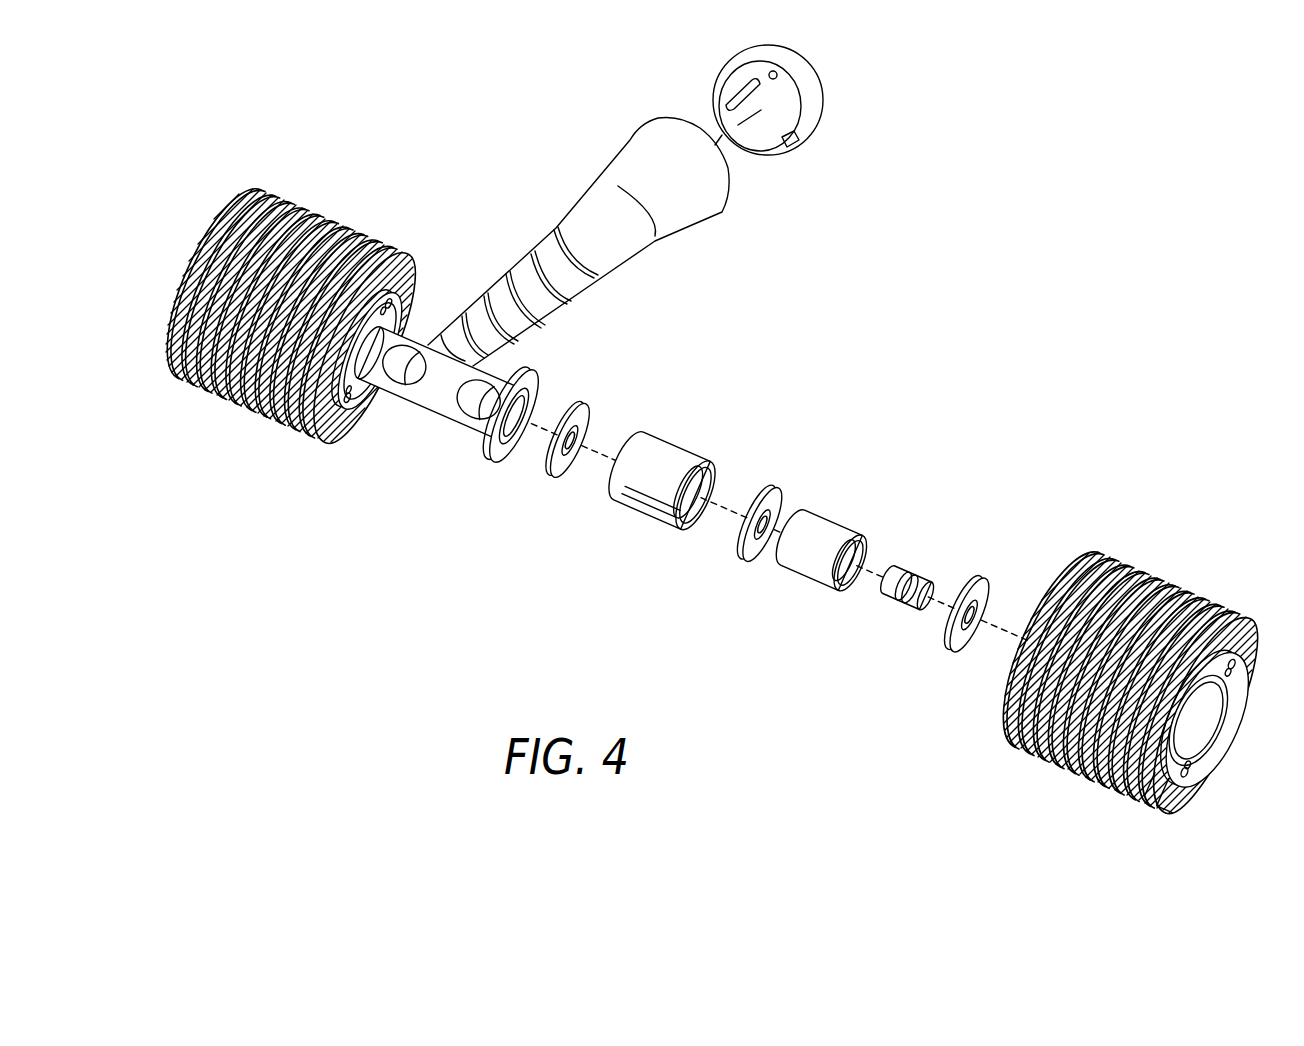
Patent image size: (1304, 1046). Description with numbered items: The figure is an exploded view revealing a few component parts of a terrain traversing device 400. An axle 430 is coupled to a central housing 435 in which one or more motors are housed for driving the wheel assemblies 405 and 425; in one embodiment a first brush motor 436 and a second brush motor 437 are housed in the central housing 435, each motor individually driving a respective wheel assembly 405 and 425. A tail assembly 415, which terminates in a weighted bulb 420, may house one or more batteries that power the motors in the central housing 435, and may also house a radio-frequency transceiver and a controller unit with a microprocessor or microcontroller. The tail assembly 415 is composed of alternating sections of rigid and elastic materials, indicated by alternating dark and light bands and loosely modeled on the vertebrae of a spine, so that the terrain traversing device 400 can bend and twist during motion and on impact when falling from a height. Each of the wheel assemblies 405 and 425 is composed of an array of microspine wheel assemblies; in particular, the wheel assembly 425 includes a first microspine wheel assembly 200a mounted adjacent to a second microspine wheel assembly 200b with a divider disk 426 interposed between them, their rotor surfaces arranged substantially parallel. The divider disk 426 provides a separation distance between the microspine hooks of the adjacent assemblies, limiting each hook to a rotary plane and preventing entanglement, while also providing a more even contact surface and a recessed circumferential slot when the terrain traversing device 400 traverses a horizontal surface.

The terrain traversing device 400 is at (1018, 281).
The wheel assembly 405 is at (348, 188).
The tail assembly 415 is at (473, 263).
The weighted bulb 420 is at (626, 112).
The wheel assembly 425 is at (1177, 537).
The divider disk 426 is at (1143, 803).
The axle 430 is at (628, 586).
The central housing 435 is at (426, 402).
The first brush motor 436 is at (384, 376).
The second brush motor 437 is at (460, 413).
The first microspine wheel assembly 200a is at (1137, 790).
The second microspine wheel assembly 200b is at (1143, 797).